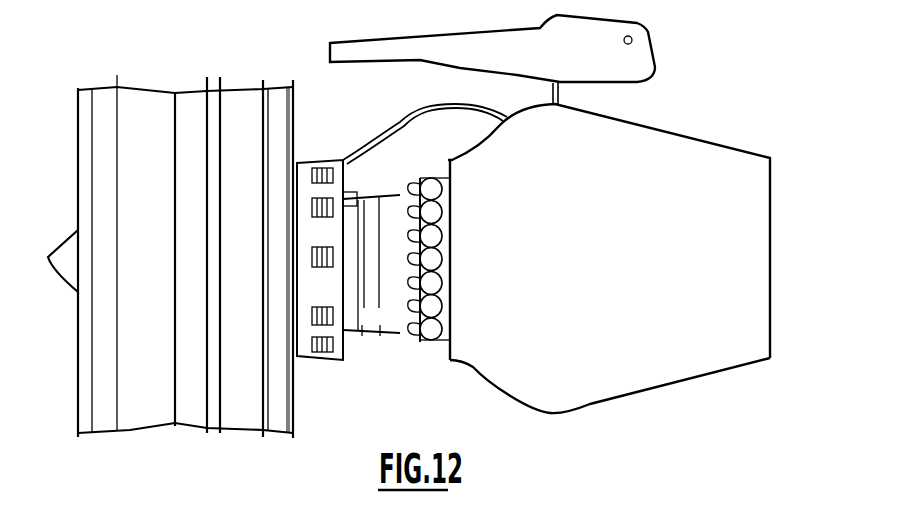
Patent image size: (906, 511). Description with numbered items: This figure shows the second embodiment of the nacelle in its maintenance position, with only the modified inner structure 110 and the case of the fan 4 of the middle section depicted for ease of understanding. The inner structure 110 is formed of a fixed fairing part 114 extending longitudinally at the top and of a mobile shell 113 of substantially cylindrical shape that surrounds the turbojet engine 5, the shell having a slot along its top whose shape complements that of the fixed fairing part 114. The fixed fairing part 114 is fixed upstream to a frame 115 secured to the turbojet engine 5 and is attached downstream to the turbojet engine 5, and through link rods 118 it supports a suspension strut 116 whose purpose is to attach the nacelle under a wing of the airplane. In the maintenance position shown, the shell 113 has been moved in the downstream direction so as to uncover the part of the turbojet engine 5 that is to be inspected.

The fan 4 is at (145, 362).
The turbojet engine 5 is at (397, 323).
The inner structure 110 is at (752, 197).
The mobile shell 113 is at (705, 343).
The fixed fairing part 114 is at (383, 128).
The frame 115 is at (307, 355).
The suspension strut 116 is at (683, 50).
The link rods 118 is at (562, 93).